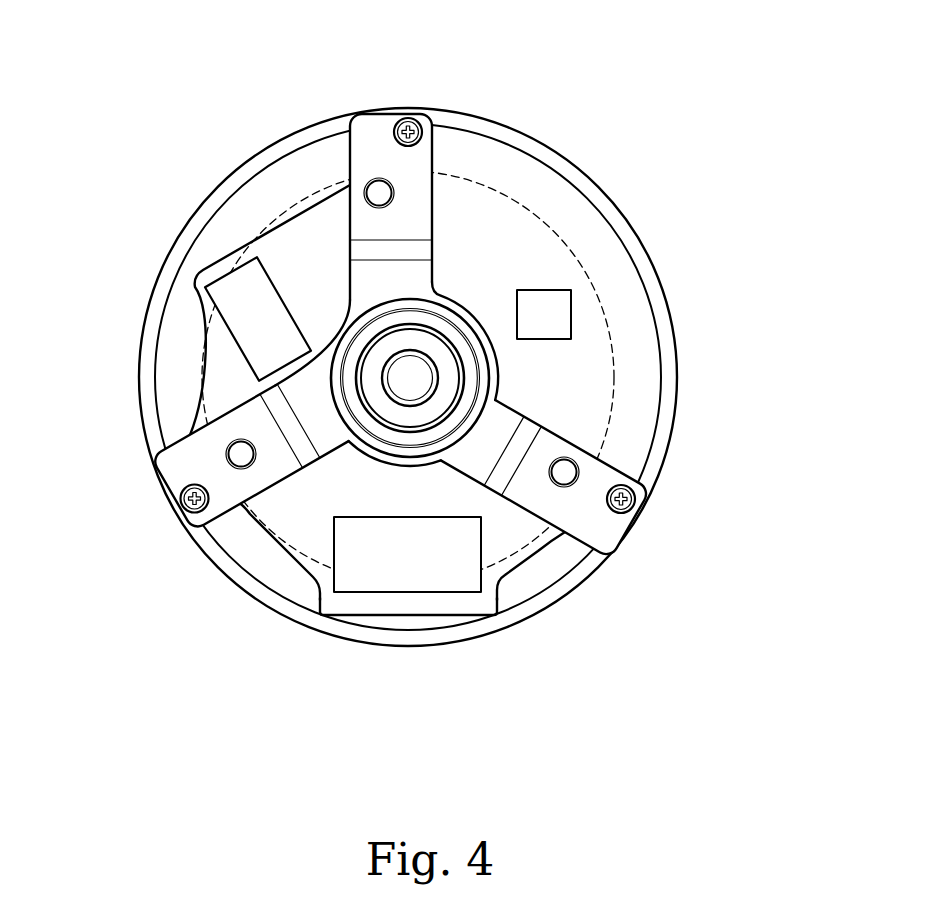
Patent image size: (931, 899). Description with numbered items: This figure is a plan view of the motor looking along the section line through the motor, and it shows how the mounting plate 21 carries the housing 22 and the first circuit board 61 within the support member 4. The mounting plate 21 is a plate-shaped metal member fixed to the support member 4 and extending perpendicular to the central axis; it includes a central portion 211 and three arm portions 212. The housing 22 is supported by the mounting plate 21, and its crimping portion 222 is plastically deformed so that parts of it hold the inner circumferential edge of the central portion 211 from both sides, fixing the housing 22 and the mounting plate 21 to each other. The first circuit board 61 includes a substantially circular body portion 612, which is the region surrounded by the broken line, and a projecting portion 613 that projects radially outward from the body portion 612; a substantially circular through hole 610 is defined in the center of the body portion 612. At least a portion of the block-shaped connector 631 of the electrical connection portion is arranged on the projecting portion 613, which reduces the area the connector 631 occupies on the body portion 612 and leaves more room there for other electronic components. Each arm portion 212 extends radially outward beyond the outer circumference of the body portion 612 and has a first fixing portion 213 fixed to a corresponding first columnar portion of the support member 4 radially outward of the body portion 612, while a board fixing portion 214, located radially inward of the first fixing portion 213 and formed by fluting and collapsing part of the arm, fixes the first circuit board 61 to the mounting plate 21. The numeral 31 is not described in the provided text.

The support member 4 is at (556, 160).
The mounting plate 21 is at (518, 385).
The central portion 211 is at (340, 330).
The arm portions 212 is at (418, 188).
The first fixing portion 213 is at (404, 116).
The board fixing portion 214 is at (372, 181).
The housing 22 is at (481, 337).
The crimping portion 222 is at (450, 320).
The shaft 31 is at (402, 382).
The first circuit board 61 is at (396, 627).
The body portion 612 is at (295, 513).
The projecting portion 613 is at (340, 605).
The connector 631 is at (405, 565).
The through hole 610 is at (417, 437).